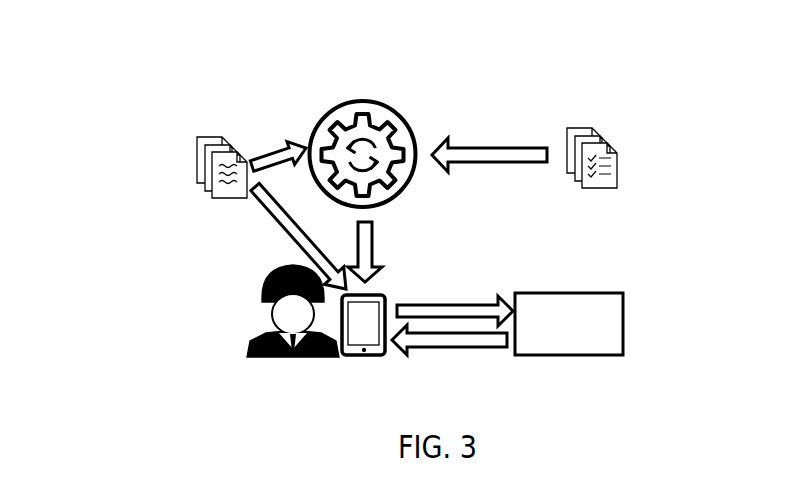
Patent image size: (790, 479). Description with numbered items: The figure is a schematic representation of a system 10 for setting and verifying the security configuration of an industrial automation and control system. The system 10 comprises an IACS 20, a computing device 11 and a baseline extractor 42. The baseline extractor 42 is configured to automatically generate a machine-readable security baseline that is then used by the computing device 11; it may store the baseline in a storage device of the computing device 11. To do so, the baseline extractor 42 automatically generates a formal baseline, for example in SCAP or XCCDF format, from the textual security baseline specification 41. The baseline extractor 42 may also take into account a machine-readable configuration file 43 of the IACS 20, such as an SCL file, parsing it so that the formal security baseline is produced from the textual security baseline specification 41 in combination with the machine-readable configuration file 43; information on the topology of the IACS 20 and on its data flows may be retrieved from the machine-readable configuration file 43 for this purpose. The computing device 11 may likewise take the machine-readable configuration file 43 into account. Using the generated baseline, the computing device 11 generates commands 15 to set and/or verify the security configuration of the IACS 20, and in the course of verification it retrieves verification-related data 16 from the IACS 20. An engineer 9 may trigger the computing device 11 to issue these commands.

The system 10 is at (223, 49).
The engineer 9 is at (247, 357).
The computing device 11 is at (388, 352).
The commands 15 is at (435, 303).
The verification-related data 16 is at (458, 347).
The IACS 20 is at (623, 355).
The textual security baseline specification 41 is at (618, 187).
The baseline extractor 42 is at (403, 190).
The machine-readable configuration file 43 is at (211, 196).